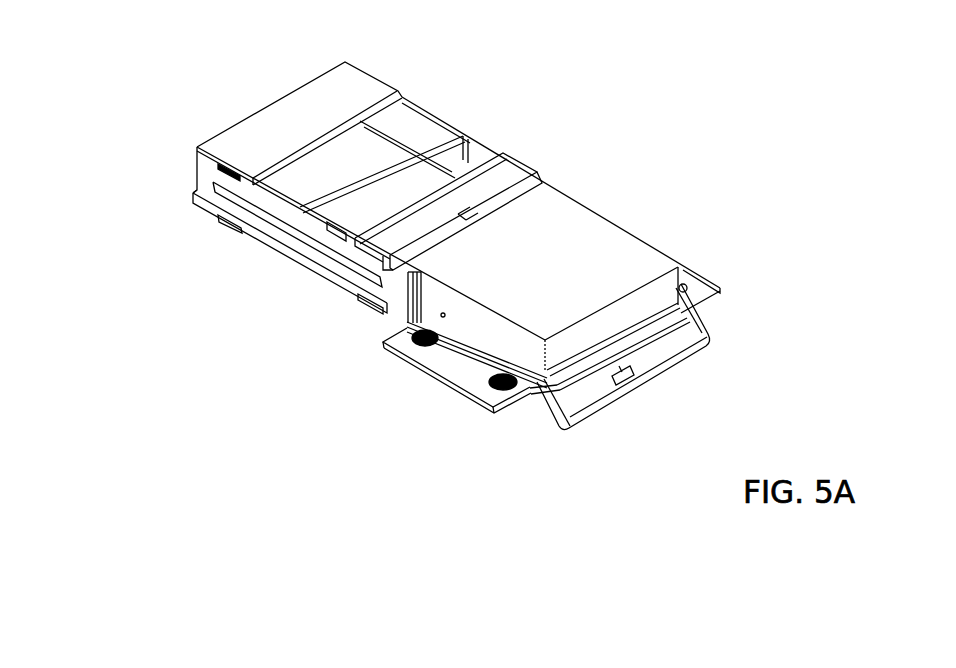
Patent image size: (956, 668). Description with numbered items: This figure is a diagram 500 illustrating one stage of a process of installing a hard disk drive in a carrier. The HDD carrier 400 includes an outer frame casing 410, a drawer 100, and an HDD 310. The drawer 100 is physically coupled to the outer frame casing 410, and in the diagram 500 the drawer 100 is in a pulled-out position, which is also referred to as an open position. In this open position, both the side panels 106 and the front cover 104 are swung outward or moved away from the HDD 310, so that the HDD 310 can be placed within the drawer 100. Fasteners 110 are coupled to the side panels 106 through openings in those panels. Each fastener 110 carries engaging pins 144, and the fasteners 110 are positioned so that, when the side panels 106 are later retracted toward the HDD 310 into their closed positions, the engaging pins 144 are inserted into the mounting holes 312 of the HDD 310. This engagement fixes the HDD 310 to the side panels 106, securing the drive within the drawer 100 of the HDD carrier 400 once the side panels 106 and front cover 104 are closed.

The diagram 500 is at (109, 148).
The outer frame casing 410 is at (397, 78).
The drawer 100 is at (706, 253).
The HDD 310 is at (535, 263).
The mounting holes 312 is at (521, 358).
The fasteners 110 is at (515, 380).
The side panels 106 is at (437, 367).
The engaging pins 144 is at (513, 387).
The front cover 104 is at (683, 357).
The HDD carrier 400 is at (398, 452).